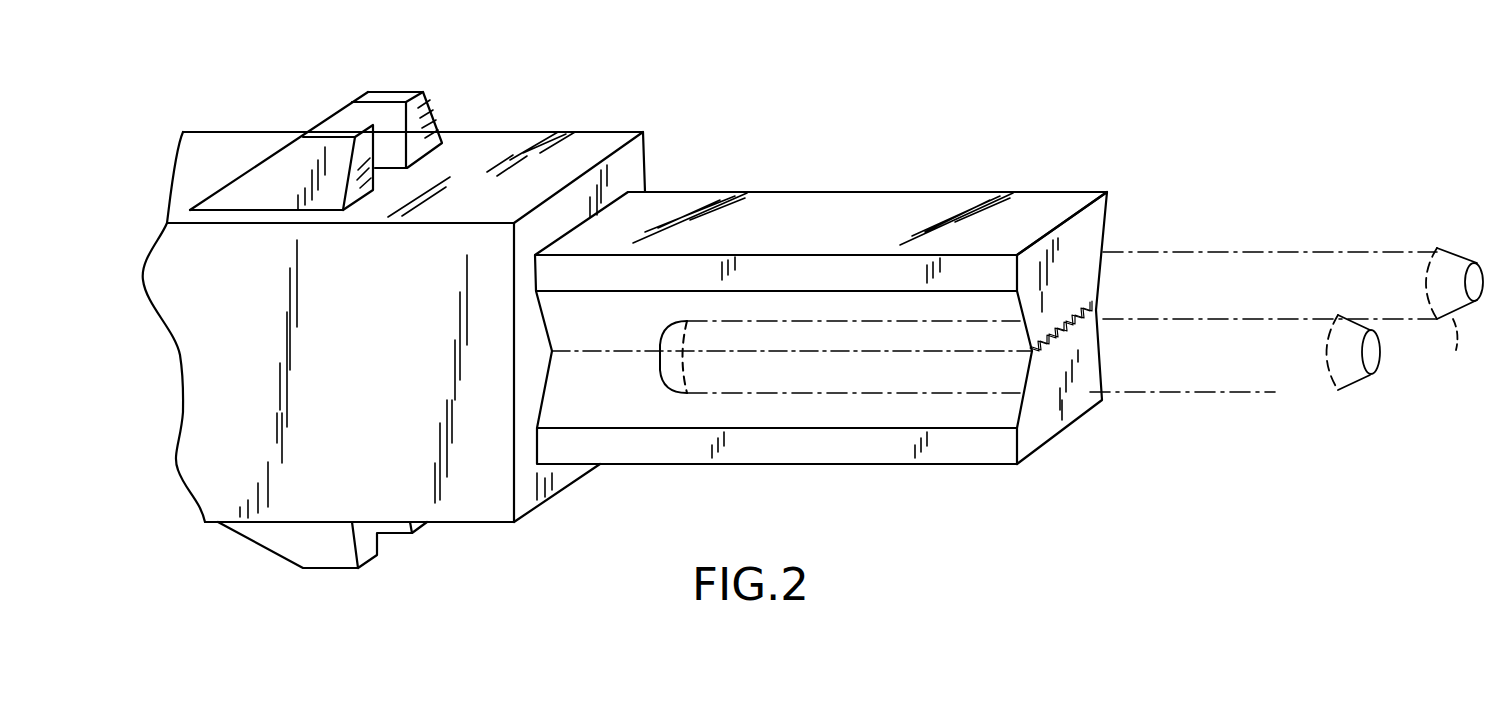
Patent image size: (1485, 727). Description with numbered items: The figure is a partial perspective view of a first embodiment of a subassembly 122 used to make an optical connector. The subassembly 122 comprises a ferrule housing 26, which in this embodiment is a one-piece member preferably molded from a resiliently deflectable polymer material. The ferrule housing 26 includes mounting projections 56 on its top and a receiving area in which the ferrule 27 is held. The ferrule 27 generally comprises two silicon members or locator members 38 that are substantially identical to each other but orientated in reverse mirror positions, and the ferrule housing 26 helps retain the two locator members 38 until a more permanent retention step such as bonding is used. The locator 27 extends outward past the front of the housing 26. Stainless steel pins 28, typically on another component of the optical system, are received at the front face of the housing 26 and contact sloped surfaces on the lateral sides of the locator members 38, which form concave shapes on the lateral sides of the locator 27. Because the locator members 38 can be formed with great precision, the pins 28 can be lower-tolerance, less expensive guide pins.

The subassembly 122 is at (1242, 147).
The ferrule housing 26 is at (402, 500).
The mounting projections 56 is at (368, 92).
The ferrule 27 is at (821, 330).
The silicon members 38 is at (1070, 238).
The pins 28 is at (1370, 353).